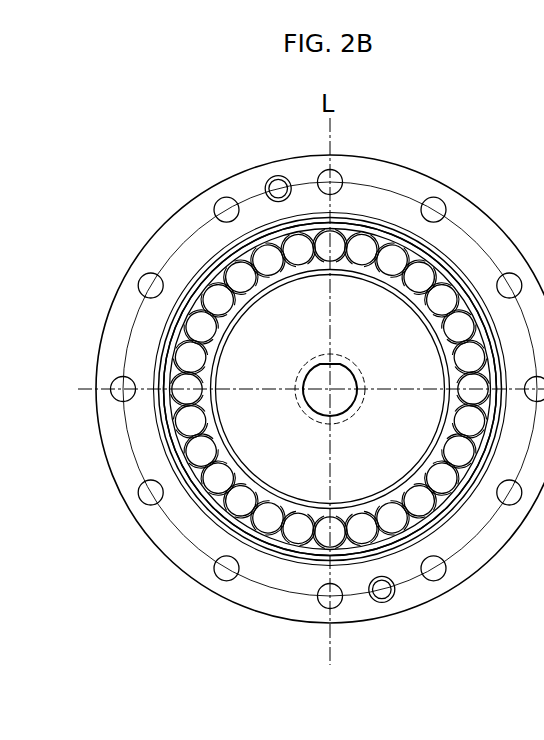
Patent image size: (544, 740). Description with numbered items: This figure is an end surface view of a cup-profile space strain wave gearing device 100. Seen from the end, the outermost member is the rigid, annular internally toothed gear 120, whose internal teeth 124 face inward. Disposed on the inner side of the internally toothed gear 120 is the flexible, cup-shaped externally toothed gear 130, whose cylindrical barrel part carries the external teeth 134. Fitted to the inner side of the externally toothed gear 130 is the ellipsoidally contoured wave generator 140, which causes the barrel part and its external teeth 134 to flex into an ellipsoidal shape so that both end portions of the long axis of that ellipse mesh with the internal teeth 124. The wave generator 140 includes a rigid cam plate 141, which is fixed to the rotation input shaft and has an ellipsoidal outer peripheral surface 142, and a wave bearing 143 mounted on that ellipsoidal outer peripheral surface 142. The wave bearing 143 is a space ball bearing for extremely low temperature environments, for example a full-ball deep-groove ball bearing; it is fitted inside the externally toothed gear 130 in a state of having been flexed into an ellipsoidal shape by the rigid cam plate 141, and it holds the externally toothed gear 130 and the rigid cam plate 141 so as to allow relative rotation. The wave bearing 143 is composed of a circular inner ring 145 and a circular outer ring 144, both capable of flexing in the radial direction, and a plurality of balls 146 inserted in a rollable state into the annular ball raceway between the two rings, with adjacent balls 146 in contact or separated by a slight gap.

The strain wave gearing device 100 is at (151, 193).
The internally toothed gear 120 is at (150, 306).
The internal teeth 124 is at (163, 355).
The external teeth 134 is at (160, 367).
The externally toothed gear 130 is at (145, 410).
The wave generator 140 is at (273, 459).
The rigid cam plate 141 is at (265, 468).
The ellipsoidal outer peripheral surface 142 is at (272, 502).
The wave bearing 143 is at (252, 535).
The outer ring 144 is at (248, 488).
The inner ring 145 is at (285, 553).
The balls 146 is at (313, 463).